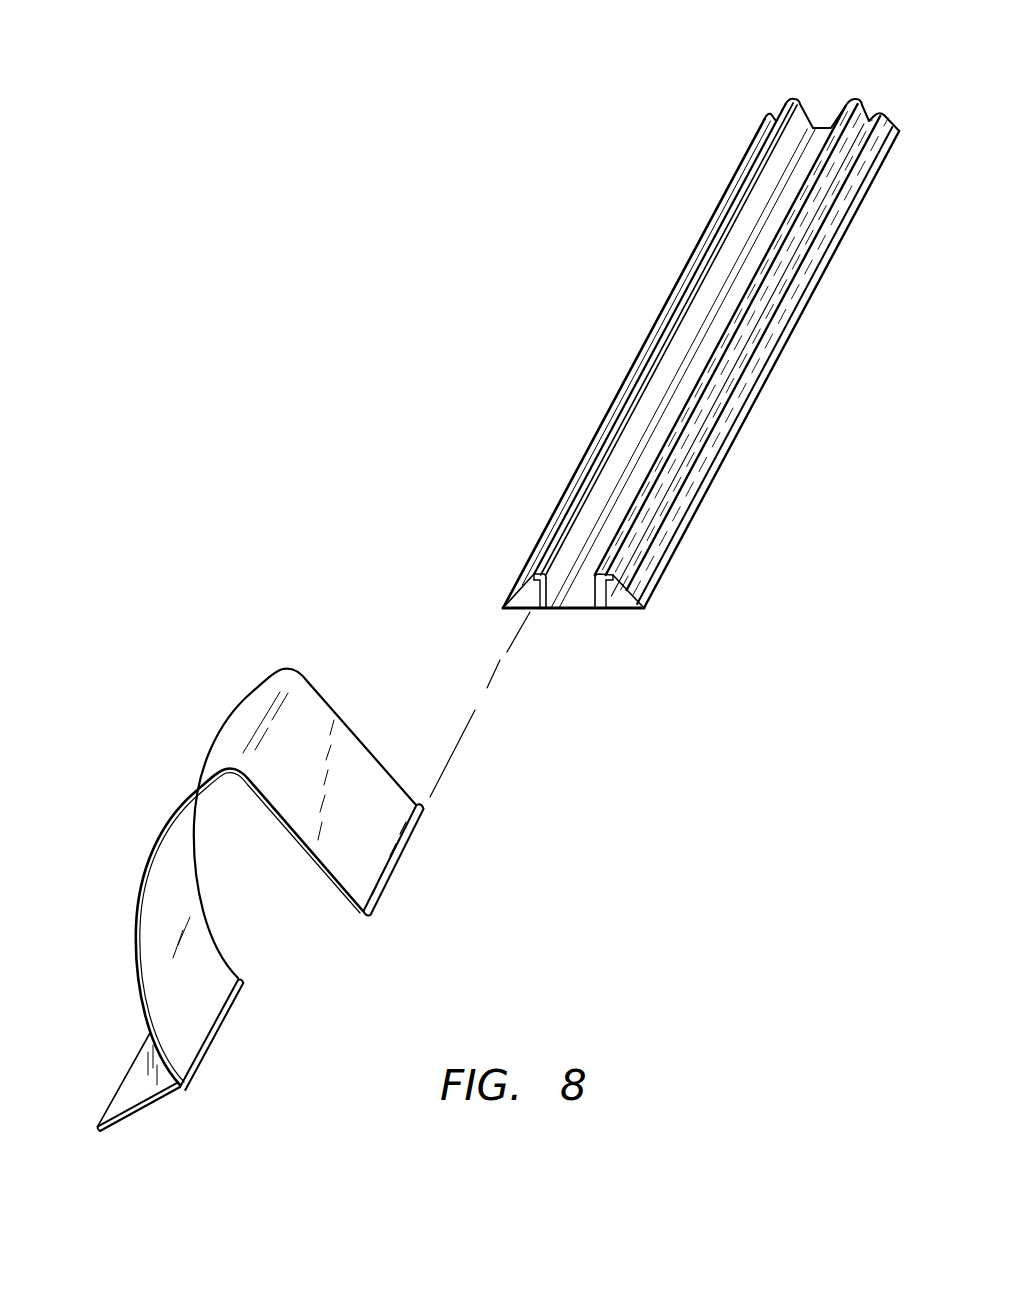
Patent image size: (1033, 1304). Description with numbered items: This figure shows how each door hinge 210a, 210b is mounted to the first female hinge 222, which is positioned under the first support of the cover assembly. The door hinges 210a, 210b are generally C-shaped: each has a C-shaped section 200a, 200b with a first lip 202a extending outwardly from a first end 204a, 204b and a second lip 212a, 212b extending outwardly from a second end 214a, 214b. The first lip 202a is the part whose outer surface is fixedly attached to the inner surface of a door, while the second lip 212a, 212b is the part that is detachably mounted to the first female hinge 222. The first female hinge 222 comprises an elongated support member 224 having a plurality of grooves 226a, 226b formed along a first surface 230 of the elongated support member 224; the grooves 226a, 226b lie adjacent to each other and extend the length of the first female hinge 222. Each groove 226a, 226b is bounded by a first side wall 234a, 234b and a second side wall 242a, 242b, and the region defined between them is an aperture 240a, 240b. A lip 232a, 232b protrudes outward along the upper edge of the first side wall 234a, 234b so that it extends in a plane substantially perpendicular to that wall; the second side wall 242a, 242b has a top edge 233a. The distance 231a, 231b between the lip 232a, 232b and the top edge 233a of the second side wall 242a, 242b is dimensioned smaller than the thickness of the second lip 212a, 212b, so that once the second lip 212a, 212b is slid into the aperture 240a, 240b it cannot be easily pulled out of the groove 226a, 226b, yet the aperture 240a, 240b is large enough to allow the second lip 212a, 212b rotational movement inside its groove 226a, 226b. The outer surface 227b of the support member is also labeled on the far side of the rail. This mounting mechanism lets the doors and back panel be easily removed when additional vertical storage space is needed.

The C-shaped section 200a is at (336, 877).
The C-shaped section 200b is at (173, 803).
The first lip 202a is at (134, 1060).
The first end 204a is at (203, 1065).
The first end 204b is at (177, 1090).
The door hinge 210a is at (276, 843).
The door hinge 210b is at (223, 723).
The second lip 212a is at (498, 879).
The second lip 212b is at (421, 807).
The second end 214a is at (453, 892).
The second end 214b is at (368, 915).
The first female hinge 222 is at (658, 108).
The elongated support member 224 is at (832, 315).
The groove 226a is at (570, 482).
The groove 226b is at (640, 575).
The outer surface 227b is at (727, 403).
The first surface 230 is at (572, 612).
The distance 231a is at (562, 509).
The distance 231b is at (648, 503).
The lip 232a is at (542, 577).
The lip 232b is at (598, 612).
The top edge 233a is at (618, 389).
The first side wall 234a is at (608, 429).
The first side wall 234b is at (582, 612).
The aperture 240a is at (660, 315).
The aperture 240b is at (735, 357).
The second side wall 242a is at (530, 555).
The second side wall 242b is at (633, 612).